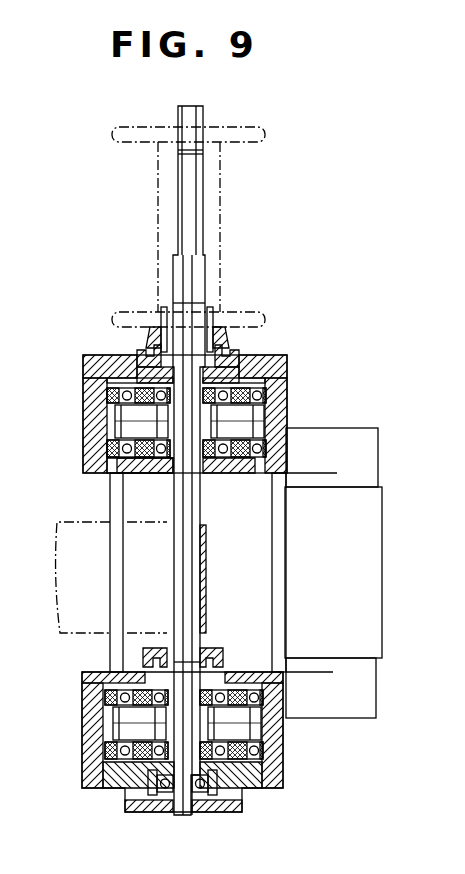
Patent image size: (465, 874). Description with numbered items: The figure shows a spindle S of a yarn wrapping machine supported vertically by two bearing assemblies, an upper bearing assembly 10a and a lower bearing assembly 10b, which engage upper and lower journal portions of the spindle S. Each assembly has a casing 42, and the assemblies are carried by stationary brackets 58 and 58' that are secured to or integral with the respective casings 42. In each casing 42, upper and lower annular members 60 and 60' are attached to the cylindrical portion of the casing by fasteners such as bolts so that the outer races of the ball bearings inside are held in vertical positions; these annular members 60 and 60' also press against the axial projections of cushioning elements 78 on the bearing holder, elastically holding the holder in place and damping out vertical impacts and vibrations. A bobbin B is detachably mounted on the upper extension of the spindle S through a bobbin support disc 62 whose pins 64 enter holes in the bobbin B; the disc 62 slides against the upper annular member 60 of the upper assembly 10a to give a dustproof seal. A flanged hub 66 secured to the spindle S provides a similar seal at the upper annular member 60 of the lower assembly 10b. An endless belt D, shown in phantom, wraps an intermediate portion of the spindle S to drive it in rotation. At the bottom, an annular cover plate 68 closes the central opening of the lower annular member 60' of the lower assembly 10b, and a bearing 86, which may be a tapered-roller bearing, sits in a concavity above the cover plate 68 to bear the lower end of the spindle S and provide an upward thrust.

The bobbin B is at (221, 247).
The spindle S is at (172, 511).
The pins 64 is at (160, 303).
The bobbin support disc 62 is at (230, 348).
The upper annular member 60 is at (212, 578).
The lower annular member 60' is at (208, 643).
The upper bearing assembly 10a is at (78, 386).
The lower bearing assembly 10b is at (77, 731).
The casing 42 is at (283, 413).
The cushioning elements 78 is at (265, 398).
The bracket 58 is at (355, 543).
The bracket 58' is at (356, 688).
The endless belt D is at (207, 566).
The flanged hub 66 is at (210, 640).
The bearing 86 is at (160, 796).
The annular cover plate 68 is at (222, 806).